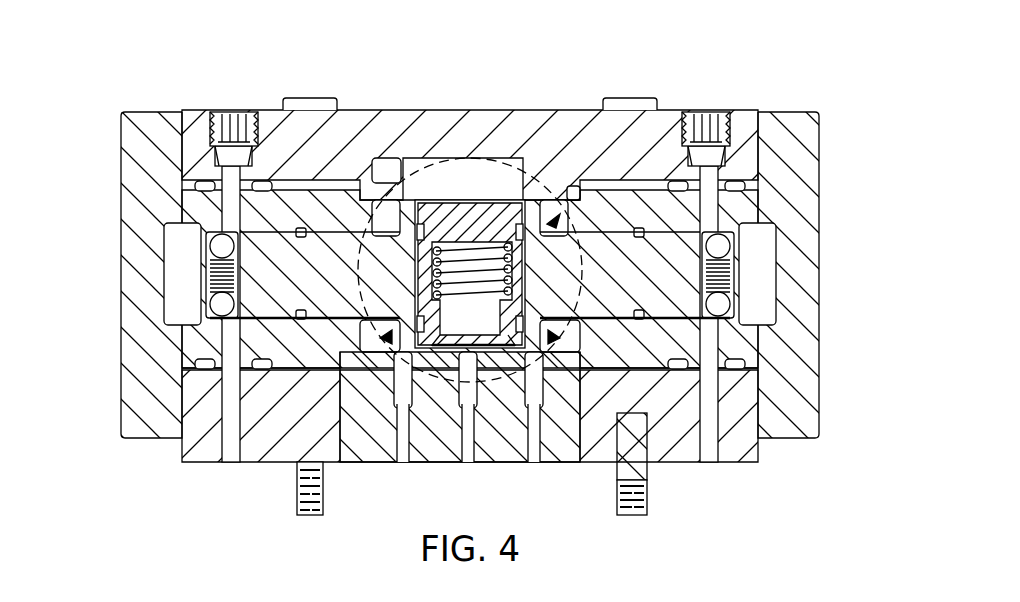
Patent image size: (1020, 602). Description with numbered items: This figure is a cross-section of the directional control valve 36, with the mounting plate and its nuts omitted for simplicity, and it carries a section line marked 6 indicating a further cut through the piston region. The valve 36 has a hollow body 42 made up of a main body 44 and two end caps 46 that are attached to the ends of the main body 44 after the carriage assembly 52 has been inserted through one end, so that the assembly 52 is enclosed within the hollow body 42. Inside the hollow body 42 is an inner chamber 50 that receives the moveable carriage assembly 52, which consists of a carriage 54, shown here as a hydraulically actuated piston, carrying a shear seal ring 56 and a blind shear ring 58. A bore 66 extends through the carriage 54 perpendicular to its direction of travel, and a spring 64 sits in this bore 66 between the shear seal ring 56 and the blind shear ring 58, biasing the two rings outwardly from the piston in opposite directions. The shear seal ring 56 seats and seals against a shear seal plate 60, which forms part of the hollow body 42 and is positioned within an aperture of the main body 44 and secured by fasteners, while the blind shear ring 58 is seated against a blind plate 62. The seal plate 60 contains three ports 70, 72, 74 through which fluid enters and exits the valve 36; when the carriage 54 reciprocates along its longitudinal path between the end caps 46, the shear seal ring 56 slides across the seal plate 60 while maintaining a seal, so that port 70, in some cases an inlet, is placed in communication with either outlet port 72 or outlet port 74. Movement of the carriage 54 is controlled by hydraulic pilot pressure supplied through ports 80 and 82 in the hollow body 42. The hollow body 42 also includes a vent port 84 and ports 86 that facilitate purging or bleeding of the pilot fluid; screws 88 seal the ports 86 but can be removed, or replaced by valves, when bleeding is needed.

The directional control valve 36 is at (97, 94).
The hollow body 42 is at (182, 447).
The main body 44 is at (470, 110).
The end caps 46 is at (121, 280).
The inner chamber 50 is at (388, 224).
The carriage assembly 52 is at (575, 170).
The carriage 54 is at (698, 243).
The shear seal ring 56 is at (428, 338).
The blind shear ring 58 is at (450, 207).
The shear seal plate 60 is at (504, 448).
The blind plate 62 is at (557, 168).
The spring 64 is at (473, 253).
The bore 66 is at (517, 243).
The port 70 is at (466, 460).
The port 72 is at (398, 460).
The port 74 is at (538, 452).
The port 80 is at (702, 462).
The port 82 is at (232, 462).
The vent port 84 is at (325, 448).
The ports 86 is at (232, 133).
The screws 88 is at (258, 124).
The section line 6- 6 is at (470, 270).